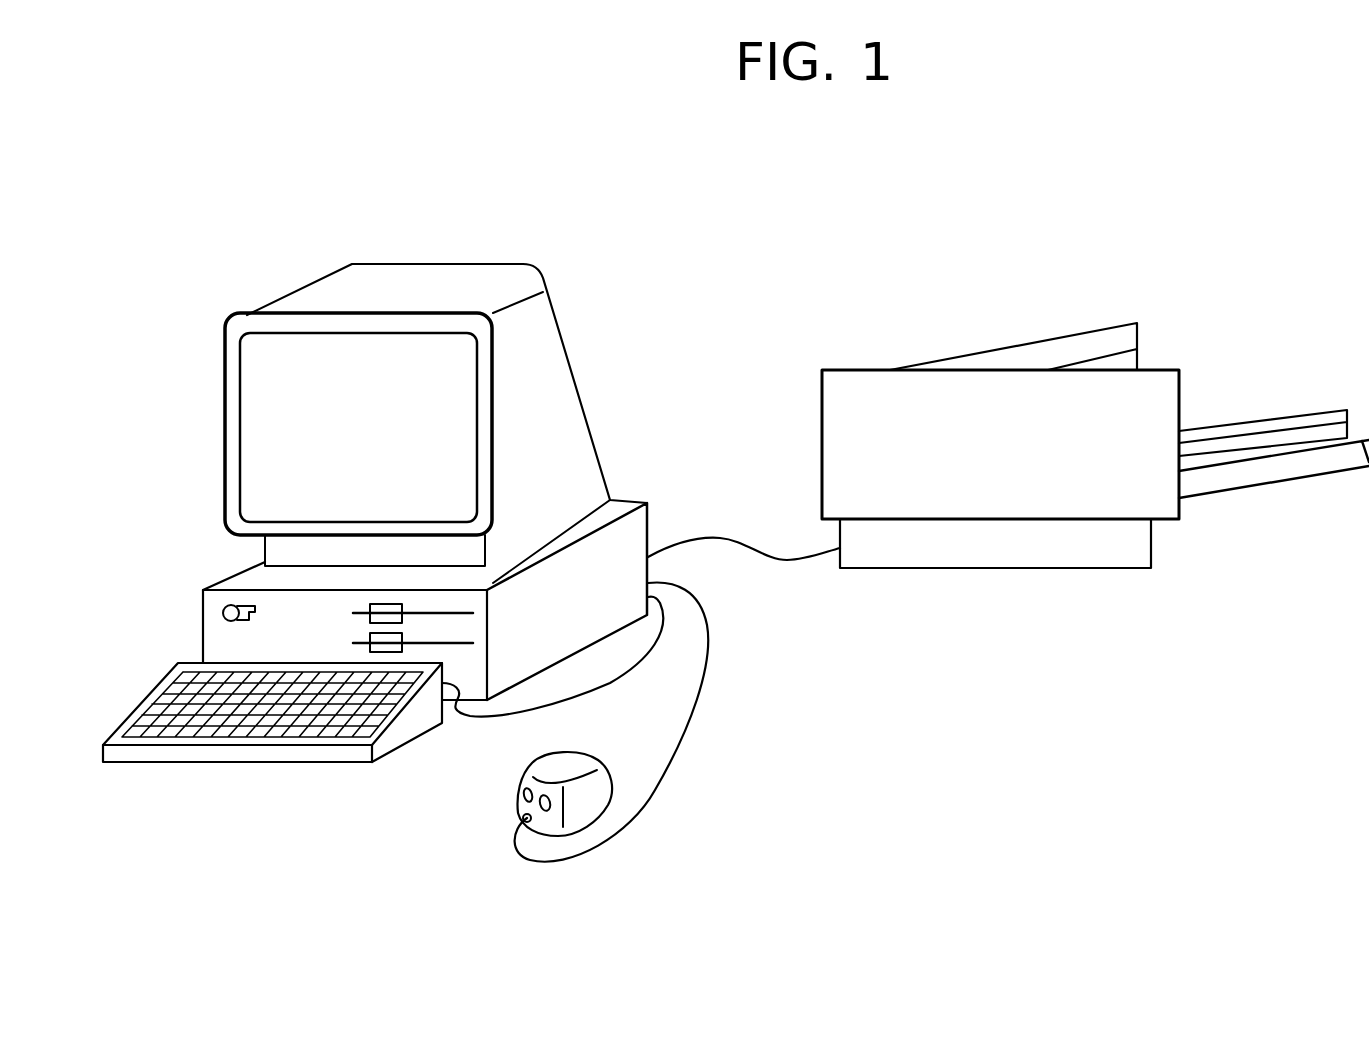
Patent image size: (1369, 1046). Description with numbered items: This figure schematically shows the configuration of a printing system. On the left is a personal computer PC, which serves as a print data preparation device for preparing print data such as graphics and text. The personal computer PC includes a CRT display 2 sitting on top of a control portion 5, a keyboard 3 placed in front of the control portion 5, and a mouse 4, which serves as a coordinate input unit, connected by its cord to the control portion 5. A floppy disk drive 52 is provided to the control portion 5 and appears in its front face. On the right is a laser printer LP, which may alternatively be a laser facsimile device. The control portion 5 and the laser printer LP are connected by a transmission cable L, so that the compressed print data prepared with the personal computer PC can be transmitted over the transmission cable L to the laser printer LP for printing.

The personal computer PC is at (490, 257).
The laser printer LP is at (1142, 309).
The transmission cable L is at (763, 562).
The CRT display 2 is at (255, 433).
The keyboard 3 is at (278, 755).
The mouse 4 is at (613, 783).
The control portion 5 is at (633, 535).
The floppy disk drive 52 is at (457, 635).